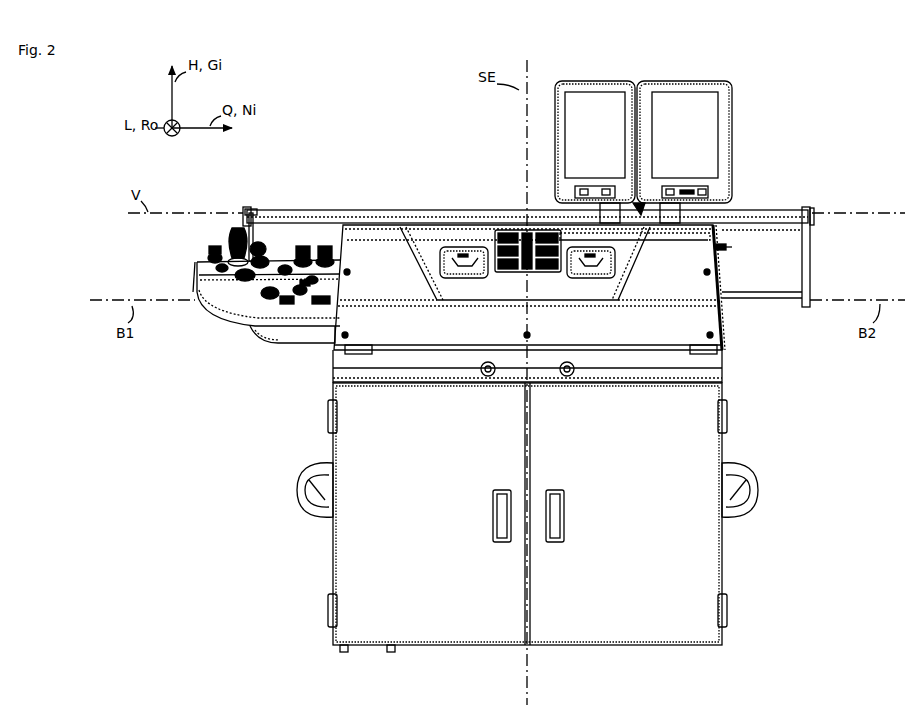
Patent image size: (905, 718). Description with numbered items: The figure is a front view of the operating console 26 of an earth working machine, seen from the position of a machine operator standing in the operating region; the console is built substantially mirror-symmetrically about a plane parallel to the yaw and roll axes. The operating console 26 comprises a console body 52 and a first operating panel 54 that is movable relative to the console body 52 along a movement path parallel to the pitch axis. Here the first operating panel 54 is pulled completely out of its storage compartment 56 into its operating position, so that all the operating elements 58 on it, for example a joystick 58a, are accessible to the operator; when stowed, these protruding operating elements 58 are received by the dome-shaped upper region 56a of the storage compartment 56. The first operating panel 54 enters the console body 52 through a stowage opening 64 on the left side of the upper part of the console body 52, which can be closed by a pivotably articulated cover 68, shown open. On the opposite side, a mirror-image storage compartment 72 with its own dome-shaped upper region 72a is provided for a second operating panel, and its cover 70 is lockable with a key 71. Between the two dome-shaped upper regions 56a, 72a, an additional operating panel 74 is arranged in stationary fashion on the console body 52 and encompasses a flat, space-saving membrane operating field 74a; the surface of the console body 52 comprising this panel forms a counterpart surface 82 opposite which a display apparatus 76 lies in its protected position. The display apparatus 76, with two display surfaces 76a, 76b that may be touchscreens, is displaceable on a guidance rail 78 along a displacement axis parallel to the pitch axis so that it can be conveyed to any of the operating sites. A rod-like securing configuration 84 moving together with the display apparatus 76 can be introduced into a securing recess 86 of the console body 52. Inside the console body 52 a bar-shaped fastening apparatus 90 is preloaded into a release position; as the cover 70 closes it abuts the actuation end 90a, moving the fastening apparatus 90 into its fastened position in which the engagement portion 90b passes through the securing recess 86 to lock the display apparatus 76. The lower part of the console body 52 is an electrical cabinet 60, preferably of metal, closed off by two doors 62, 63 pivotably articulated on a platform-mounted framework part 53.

The operating console 26 is at (848, 100).
The console body 52 is at (806, 447).
The framework part 53 is at (712, 358).
The first operating panel 54 is at (244, 282).
The storage compartment 56 is at (528, 265).
The upper region 56a is at (375, 270).
The operating elements 58 is at (178, 243).
The joystick 58a is at (246, 244).
The electrical cabinet 60 is at (559, 517).
The door 62 is at (466, 514).
The door 63 is at (588, 514).
The stowage opening 64 is at (318, 244).
The cover 68 is at (290, 342).
The cover 70 is at (720, 278).
The key 71 is at (733, 250).
The storage compartment 72 is at (700, 223).
The upper region 72a is at (668, 269).
The additional operating panel 74 is at (480, 245).
The membrane operating field 74a is at (452, 250).
The display apparatus 76 is at (643, 126).
The display surface 76a is at (595, 142).
The display surface 76b is at (684, 142).
The guidance rail 78 is at (778, 212).
The counterpart surface 82 is at (505, 232).
The securing configuration 84 is at (640, 213).
The securing recess 86 is at (528, 228).
The fastening apparatus 90 is at (620, 250).
The actuation end 90a is at (705, 245).
The engagement portion 90b is at (548, 230).